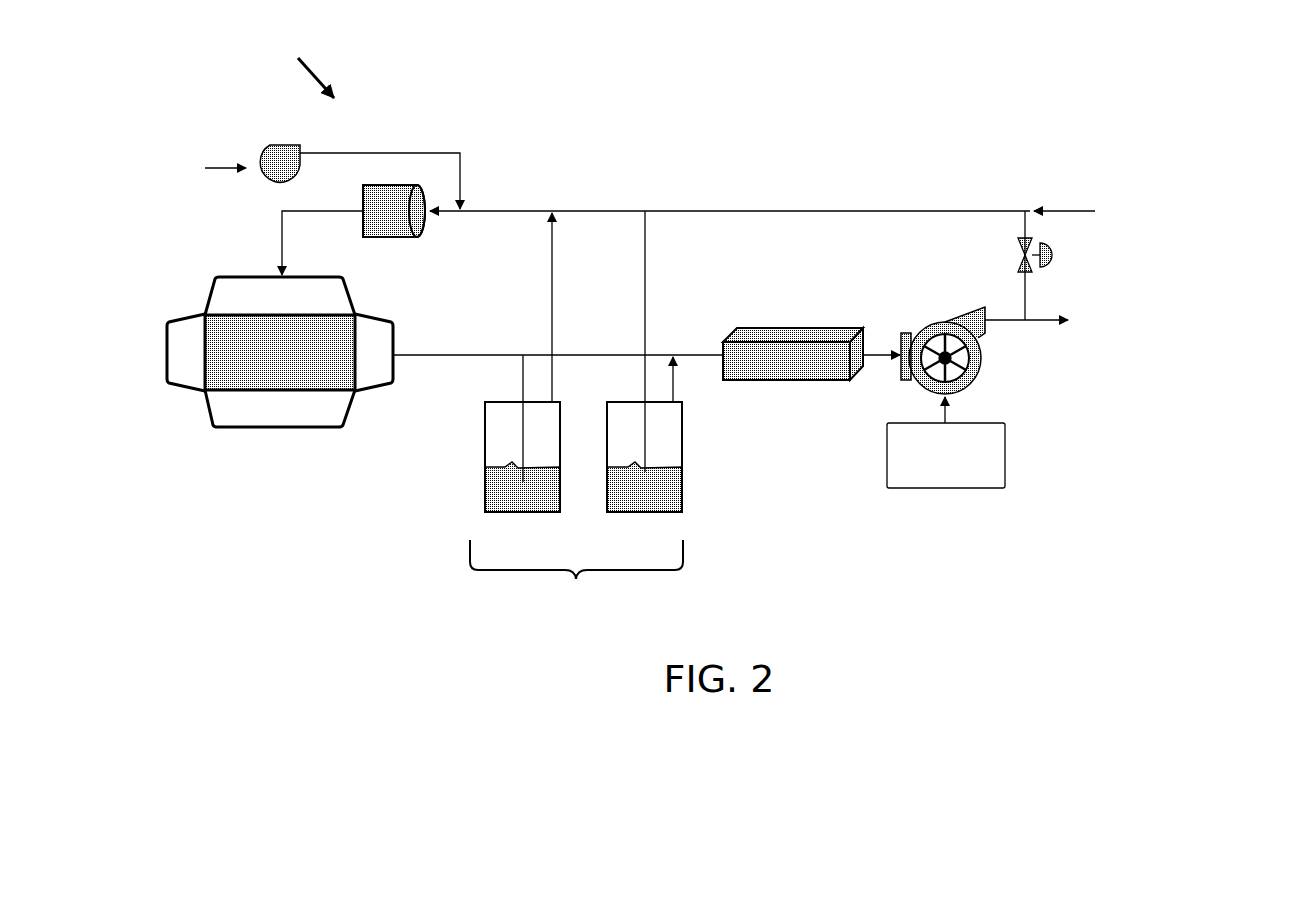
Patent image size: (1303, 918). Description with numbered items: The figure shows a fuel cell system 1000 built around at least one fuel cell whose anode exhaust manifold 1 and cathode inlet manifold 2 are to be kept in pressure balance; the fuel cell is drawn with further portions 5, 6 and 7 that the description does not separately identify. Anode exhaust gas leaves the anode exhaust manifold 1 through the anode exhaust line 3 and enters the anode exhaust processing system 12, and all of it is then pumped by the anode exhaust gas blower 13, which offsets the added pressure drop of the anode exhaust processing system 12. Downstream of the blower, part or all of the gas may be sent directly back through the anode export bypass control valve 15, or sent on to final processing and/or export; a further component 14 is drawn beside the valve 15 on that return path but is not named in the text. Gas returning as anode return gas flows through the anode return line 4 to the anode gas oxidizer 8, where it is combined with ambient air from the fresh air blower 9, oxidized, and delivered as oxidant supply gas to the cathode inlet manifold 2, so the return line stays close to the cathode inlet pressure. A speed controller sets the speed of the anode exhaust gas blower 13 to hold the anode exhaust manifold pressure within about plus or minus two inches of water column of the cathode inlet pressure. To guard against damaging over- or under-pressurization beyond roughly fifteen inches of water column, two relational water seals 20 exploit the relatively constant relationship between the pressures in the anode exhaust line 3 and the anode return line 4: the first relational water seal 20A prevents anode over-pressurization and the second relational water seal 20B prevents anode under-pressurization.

The fuel cell system 1000 is at (299, 67).
The anode exhaust manifold 1 is at (372, 322).
The cathode inlet manifold 2 is at (207, 298).
The anode exhaust line 3 is at (467, 368).
The anode return line 4 is at (612, 186).
The cathode side 5 is at (166, 346).
The cathode outlet manifold 6 is at (279, 430).
The fuel cell stack 7 is at (280, 352).
The anode gas oxidizer 8 is at (353, 230).
The fresh air blower 9 is at (308, 177).
The anode exhaust processing system 12 is at (811, 354).
The anode exhaust gas blower 13 is at (920, 322).
The valve 14 is at (1021, 298).
The anode export bypass control valve 15 is at (1058, 258).
The relational water seals 20 is at (576, 411).
The first relational water seal 20A is at (522, 374).
The second relational water seal 20B is at (644, 373).